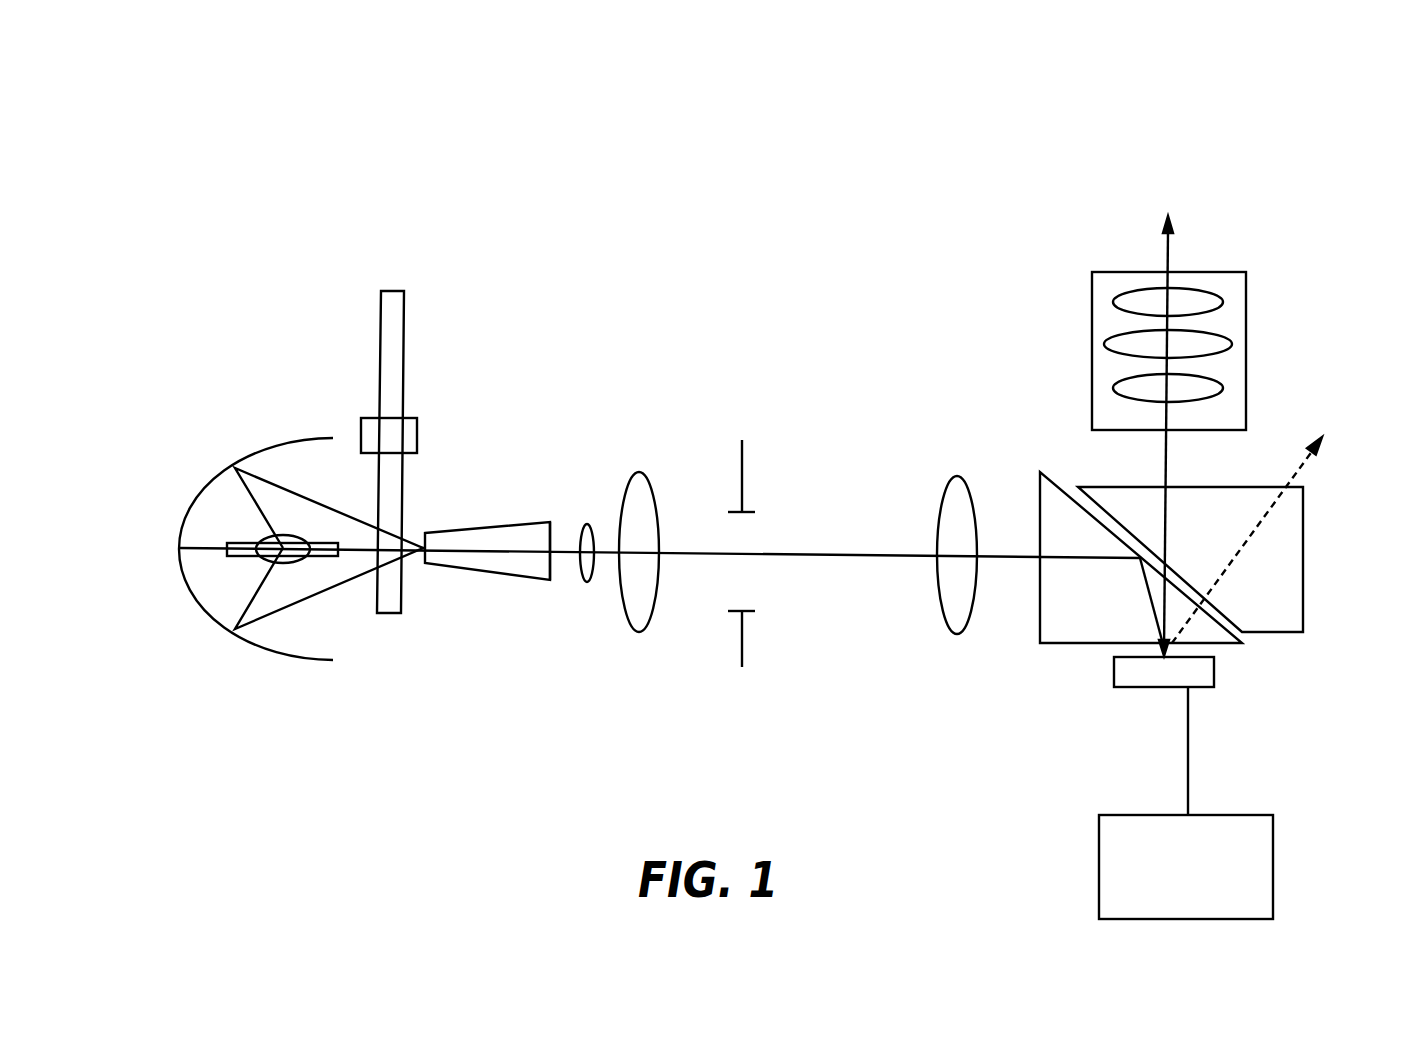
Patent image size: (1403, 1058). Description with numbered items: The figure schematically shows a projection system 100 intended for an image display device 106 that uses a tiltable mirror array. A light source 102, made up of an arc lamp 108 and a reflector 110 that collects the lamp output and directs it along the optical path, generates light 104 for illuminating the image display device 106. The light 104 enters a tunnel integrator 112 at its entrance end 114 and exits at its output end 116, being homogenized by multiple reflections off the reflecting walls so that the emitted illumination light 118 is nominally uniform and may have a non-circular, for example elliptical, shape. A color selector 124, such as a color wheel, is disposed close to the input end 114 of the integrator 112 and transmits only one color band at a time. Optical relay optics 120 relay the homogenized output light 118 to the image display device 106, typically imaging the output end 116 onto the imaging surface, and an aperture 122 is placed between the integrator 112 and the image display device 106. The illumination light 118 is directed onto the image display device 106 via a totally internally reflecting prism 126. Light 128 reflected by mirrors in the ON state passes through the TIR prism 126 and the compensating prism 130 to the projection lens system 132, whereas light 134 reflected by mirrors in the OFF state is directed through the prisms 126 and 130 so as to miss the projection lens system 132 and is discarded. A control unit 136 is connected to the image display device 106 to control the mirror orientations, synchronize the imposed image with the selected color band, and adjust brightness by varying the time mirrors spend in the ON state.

The projection system 100 is at (350, 175).
The light source 102 is at (252, 425).
The light 104 is at (330, 595).
The image display device 106 is at (1145, 688).
The arc lamp 108 is at (242, 557).
The reflector 110 is at (197, 503).
The tunnel integrator 112 is at (497, 568).
The entrance end 114 is at (424, 544).
The output end 116 is at (552, 528).
The homogenized illumination light 118 is at (567, 553).
The optical relay optics 120 is at (587, 525).
The aperture 122 is at (740, 643).
The color selector 124 is at (405, 332).
The TIR prism 126 is at (1032, 630).
The ON-state light 128 is at (1165, 465).
The compensating prism 130 is at (1272, 633).
The projection lens system 132 is at (1247, 327).
The OFF-state light 134 is at (1302, 467).
The control unit 136 is at (1232, 813).